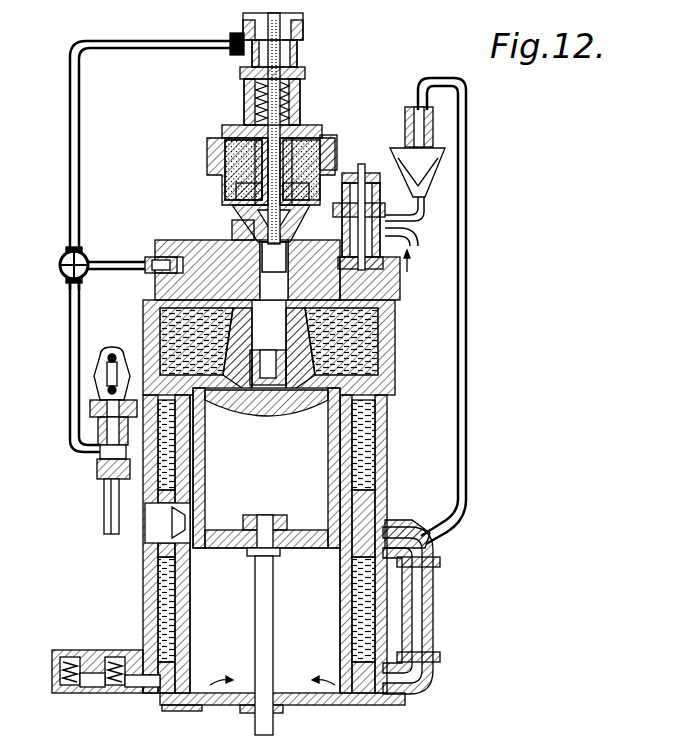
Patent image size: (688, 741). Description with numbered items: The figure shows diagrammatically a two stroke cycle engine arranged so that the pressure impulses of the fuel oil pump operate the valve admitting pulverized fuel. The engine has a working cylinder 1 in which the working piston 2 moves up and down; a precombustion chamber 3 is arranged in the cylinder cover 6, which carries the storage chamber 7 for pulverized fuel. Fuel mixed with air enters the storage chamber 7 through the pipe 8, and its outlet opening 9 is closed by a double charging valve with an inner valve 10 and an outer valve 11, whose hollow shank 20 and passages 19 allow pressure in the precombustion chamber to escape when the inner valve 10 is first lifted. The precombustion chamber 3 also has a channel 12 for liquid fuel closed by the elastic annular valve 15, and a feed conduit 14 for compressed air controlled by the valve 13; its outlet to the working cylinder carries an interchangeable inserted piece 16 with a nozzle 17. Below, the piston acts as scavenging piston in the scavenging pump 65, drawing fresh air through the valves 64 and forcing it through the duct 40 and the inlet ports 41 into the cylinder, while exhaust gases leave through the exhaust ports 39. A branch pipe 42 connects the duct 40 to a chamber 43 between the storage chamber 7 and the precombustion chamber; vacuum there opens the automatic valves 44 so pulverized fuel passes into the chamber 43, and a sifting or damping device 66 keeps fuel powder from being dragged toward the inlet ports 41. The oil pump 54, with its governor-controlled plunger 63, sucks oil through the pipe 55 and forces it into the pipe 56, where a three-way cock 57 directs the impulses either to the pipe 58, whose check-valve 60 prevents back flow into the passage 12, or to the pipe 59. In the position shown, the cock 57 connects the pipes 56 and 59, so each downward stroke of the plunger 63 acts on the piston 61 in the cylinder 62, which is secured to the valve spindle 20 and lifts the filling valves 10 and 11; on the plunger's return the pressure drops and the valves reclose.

The working cylinder 1 is at (150, 580).
The working piston 2 is at (345, 402).
The precombustion chamber 3 is at (395, 328).
The cylinder cover 6 is at (345, 318).
The storage chamber 7 is at (228, 165).
The pipe 8 is at (240, 148).
The outlet opening 9 is at (243, 238).
The inner valve 10 is at (243, 222).
The outer valve 11 is at (255, 212).
The channel 12 is at (225, 292).
The valve 13 is at (380, 258).
The feed conduit 14 is at (385, 270).
The annular valve 15 is at (222, 318).
The inserted piece 16 is at (355, 350).
The nozzle 17 is at (355, 372).
The passages 19 is at (330, 142).
The hollow shank 20 is at (300, 72).
The exhaust ports 39 is at (160, 525).
The duct 40 is at (430, 620).
The inlet ports 41 is at (428, 528).
The branch pipe 42 is at (462, 410).
The chamber 43 is at (245, 195).
The automatic valves 44 is at (250, 188).
The pump 54 is at (100, 452).
The pipe 55 is at (104, 520).
The pipe 56 is at (72, 340).
The three-way cock 57 is at (59, 270).
The pipe 58 is at (130, 262).
The pipe 59 is at (78, 88).
The check-valve 60 is at (158, 276).
The piston 61 is at (298, 34).
The cylinder 62 is at (281, 60).
The plunger 63 is at (100, 393).
The valves 64 is at (117, 655).
The scavenging pump 65 is at (226, 690).
The sifting or damping device 66 is at (430, 190).